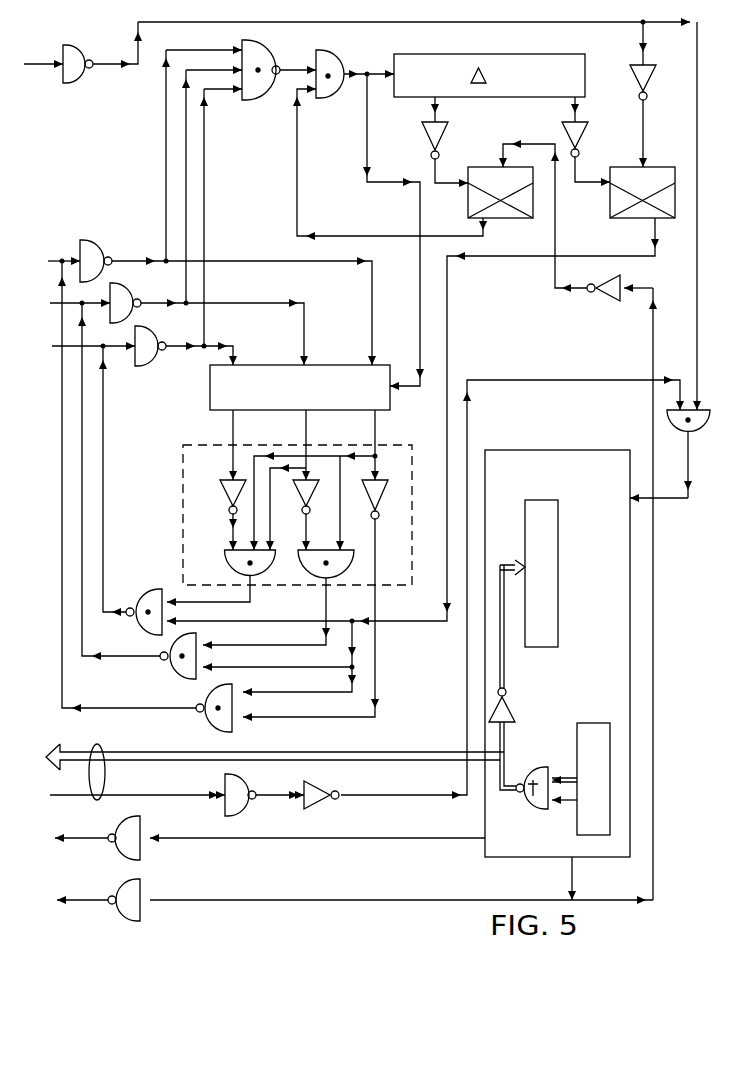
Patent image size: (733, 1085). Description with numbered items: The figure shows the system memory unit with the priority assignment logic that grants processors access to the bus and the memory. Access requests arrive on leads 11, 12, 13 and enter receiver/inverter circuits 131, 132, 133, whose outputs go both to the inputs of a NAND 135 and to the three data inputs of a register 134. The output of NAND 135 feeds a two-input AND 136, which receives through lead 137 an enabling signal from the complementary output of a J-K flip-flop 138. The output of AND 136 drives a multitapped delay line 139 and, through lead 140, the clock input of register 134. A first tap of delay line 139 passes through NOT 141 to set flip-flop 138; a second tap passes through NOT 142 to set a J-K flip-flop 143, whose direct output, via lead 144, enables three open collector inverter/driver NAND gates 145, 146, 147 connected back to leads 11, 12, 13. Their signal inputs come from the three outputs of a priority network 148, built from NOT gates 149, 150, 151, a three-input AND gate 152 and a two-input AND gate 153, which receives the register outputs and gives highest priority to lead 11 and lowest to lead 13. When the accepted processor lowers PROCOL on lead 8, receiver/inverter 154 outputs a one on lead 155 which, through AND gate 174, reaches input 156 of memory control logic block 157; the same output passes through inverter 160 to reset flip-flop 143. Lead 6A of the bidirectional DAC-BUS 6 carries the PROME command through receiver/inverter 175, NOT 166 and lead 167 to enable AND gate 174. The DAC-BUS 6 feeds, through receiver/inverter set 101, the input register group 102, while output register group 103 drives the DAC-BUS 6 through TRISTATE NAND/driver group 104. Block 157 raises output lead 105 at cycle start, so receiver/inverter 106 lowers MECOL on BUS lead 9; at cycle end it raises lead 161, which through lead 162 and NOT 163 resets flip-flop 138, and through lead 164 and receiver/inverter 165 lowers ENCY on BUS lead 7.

The DAC-BUS 6 is at (100, 768).
The lead of DAC-BUS 6A is at (146, 795).
The BUS lead 7 is at (98, 898).
The lead 8 is at (40, 63).
The BUS lead 9 is at (88, 838).
The lead 11 is at (58, 261).
The lead 12 is at (51, 303).
The lead 13 is at (53, 346).
The receiver/inverter set 101 is at (518, 706).
The input register group 102 is at (558, 516).
The output register group 103 is at (596, 723).
The TRISTATE NAND/driver group 104 is at (536, 767).
The output lead 105 is at (373, 839).
The receiver/inverter 106 is at (145, 838).
The receiver/inverter circuit 131 is at (96, 251).
The receiver/inverter circuit 132 is at (123, 290).
The receiver/inverter circuit 133 is at (150, 332).
The register 134 is at (210, 398).
The NAND 135 is at (255, 98).
The AND 136 is at (328, 99).
The lead 137 is at (297, 207).
The J-K flip-flop 138 is at (488, 167).
The multitapped delay line 139 is at (498, 57).
The lead 140 is at (367, 174).
The NOT element 141 is at (425, 140).
The NOT 142 is at (585, 132).
The J-K flip-flop 143 is at (660, 167).
The lead 144 is at (450, 305).
The inverter/driver NAND gate 145 is at (147, 503).
The inverter/driver NAND gate 146 is at (168, 676).
The inverter/driver NAND gate 147 is at (147, 593).
The priority network 148 is at (183, 512).
The NOT gate 149 is at (223, 484).
The NOT gate 150 is at (296, 484).
The NOT gate 151 is at (362, 497).
The AND gate 152 is at (224, 556).
The AND gate 153 is at (310, 565).
The receiver/inverter 154 is at (84, 61).
The lead 155 is at (646, 27).
The input of memory control logic block 156 is at (632, 500).
The memory control logic block 157 is at (545, 450).
The inverter 160 is at (650, 80).
The output lead 161 is at (572, 876).
The lead 162 is at (653, 343).
The NOT 163 is at (606, 300).
The lead 164 is at (288, 899).
The receiver/inverter 165 is at (144, 893).
The NOT 166 is at (328, 800).
The lead 167 is at (465, 666).
The AND gate 174 is at (672, 435).
The receiver/inverter 175 is at (240, 806).